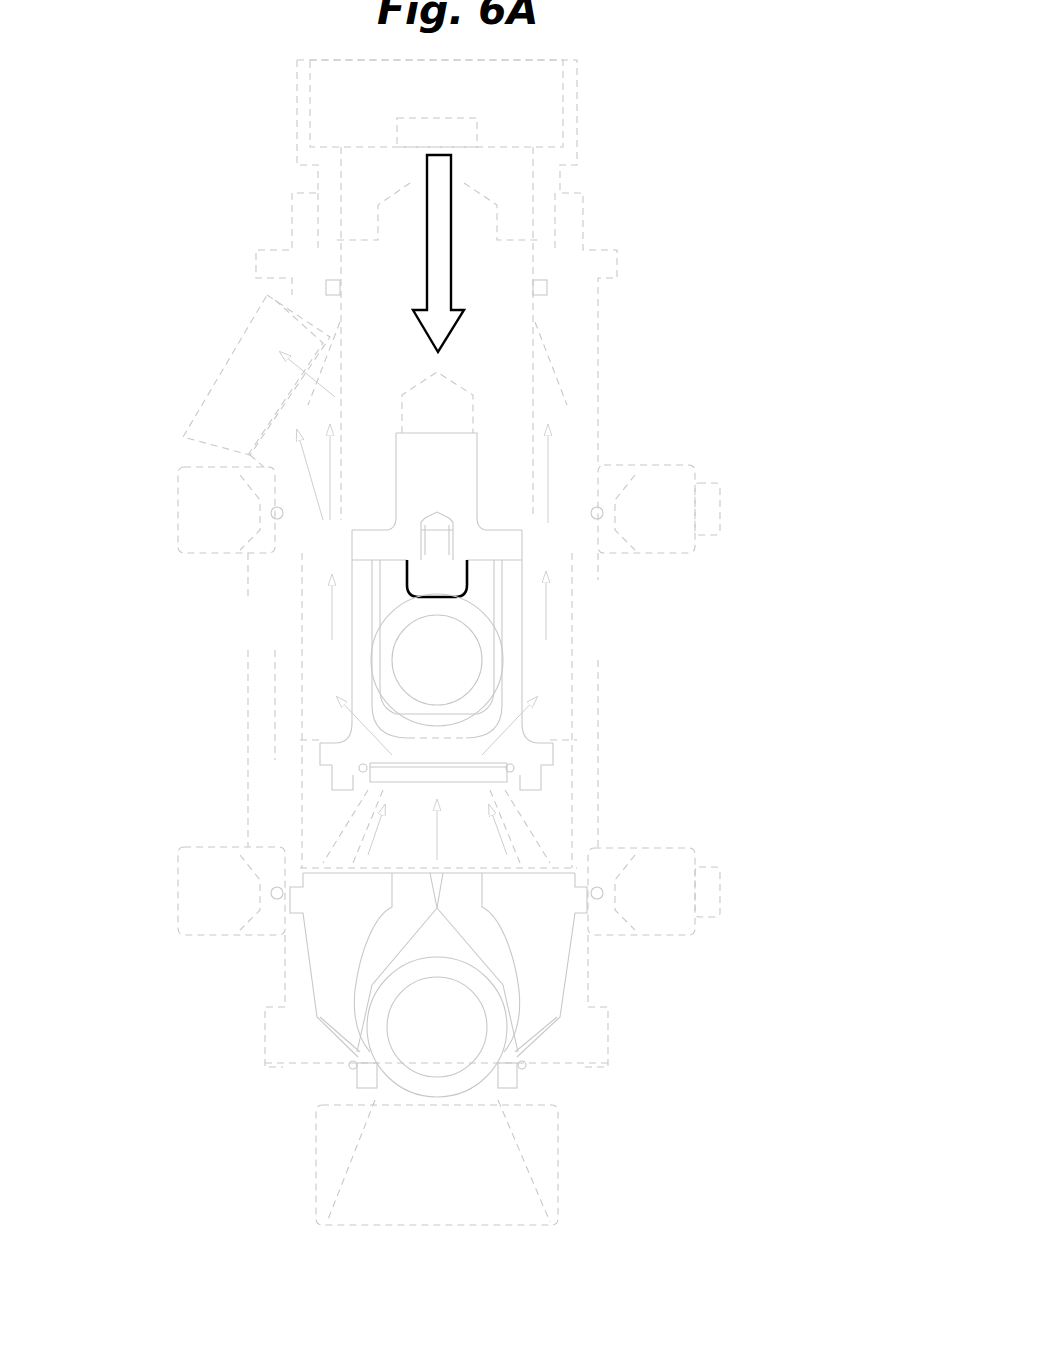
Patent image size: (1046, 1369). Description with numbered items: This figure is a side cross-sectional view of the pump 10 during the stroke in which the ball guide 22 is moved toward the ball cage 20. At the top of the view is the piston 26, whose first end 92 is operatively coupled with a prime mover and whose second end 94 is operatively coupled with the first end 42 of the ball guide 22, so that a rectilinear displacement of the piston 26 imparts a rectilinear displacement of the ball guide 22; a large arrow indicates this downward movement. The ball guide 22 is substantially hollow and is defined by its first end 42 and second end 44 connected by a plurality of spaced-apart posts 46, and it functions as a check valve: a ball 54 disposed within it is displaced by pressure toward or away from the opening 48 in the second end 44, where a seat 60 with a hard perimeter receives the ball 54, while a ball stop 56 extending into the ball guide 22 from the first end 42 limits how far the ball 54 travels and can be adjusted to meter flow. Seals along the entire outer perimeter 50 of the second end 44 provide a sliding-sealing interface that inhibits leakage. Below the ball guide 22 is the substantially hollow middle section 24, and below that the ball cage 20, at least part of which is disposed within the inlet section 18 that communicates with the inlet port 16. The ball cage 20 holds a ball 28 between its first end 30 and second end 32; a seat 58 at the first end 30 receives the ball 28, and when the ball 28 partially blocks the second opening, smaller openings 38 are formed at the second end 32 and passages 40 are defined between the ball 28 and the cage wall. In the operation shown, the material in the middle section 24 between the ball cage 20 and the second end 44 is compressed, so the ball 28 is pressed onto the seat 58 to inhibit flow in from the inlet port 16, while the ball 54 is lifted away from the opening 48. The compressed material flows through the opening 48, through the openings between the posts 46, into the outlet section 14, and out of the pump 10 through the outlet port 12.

The pump 10 is at (646, 56).
The outlet port 12 is at (215, 321).
The outlet section 14 is at (297, 410).
The inlet port 16 is at (488, 1241).
The inlet section 18 is at (390, 1208).
The ball cage 20 is at (576, 956).
The ball guide 22 is at (341, 676).
The middle section 24 is at (317, 635).
The piston 26 is at (475, 235).
The ball 28 is at (420, 1065).
The first end 30 is at (336, 1048).
The second end 32 is at (527, 873).
The smaller openings 38 is at (410, 876).
The passages 40 is at (500, 933).
The first end 42 is at (490, 516).
The second end 44 is at (325, 725).
The posts 46 is at (360, 598).
The opening 48 is at (409, 792).
The outer perimeter 50 is at (333, 757).
The ball 54 is at (465, 658).
The ball stop 56 is at (450, 577).
The seat 58 is at (365, 1077).
The seat 60 is at (365, 770).
The first end 92 is at (400, 120).
The second end 94 is at (358, 507).